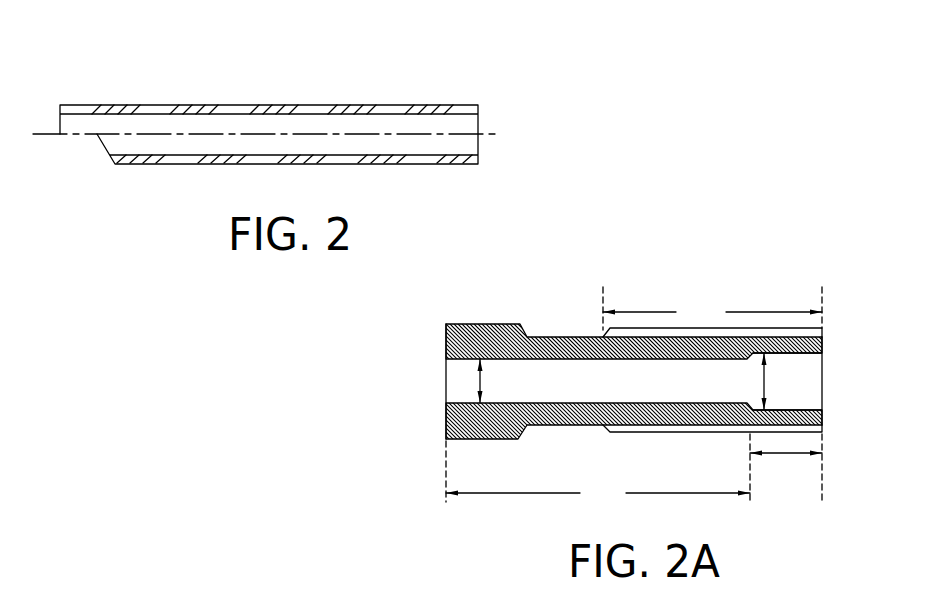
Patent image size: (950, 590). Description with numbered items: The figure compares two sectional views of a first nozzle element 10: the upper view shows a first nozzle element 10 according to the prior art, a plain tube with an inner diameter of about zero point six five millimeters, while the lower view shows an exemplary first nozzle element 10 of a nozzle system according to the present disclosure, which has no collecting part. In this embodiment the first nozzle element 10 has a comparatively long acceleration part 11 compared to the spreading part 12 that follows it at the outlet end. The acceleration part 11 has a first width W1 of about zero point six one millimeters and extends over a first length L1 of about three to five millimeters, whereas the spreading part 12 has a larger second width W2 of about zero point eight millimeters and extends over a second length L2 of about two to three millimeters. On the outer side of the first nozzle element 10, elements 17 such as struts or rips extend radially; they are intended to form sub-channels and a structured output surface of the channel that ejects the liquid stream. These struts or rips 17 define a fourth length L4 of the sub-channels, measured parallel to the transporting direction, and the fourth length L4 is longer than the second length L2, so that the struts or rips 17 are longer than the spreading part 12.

In FIG. 2, the first nozzle element 10 is at (488, 92).
In FIG. 2A, the acceleration part 11 is at (650, 390).
In FIG. 2A, the spreading part 12 is at (786, 363).
In FIG. 2A, the struts or rips 17 is at (650, 333).
In FIG. 2A, the first width W1 is at (481, 378).
In FIG. 2A, the second width W2 is at (766, 380).
In FIG. 2A, the first length L1 is at (598, 470).
In FIG. 2A, the second length L2 is at (787, 454).
In FIG. 2A, the fourth length L4 is at (712, 308).